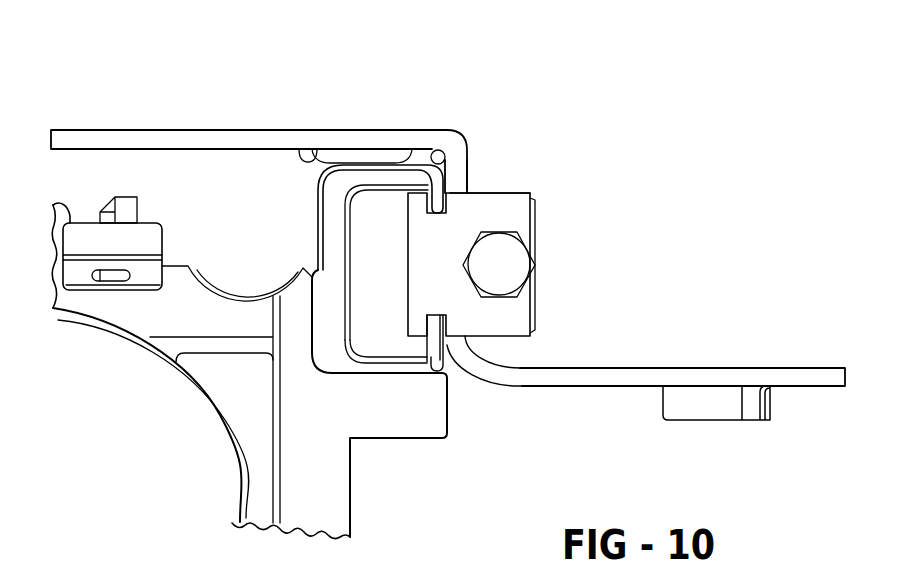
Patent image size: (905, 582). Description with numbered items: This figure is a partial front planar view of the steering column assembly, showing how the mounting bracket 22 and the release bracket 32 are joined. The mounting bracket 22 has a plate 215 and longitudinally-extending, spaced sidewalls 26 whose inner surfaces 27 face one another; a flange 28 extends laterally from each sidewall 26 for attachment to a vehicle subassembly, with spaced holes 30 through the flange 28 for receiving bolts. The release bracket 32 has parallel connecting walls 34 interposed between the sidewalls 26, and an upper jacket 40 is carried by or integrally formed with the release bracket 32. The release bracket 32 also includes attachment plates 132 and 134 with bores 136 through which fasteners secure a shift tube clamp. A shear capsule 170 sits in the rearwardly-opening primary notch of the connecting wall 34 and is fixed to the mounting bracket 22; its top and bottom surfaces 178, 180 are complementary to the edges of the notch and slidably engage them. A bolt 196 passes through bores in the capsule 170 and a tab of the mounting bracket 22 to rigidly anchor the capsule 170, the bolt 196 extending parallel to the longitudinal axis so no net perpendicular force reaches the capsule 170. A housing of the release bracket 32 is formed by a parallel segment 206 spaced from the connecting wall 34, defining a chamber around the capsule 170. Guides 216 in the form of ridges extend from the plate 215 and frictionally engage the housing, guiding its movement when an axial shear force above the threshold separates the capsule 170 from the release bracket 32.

The mounting bracket 22 is at (452, 132).
The sidewall 26 is at (467, 183).
The inner surface 27 is at (447, 147).
The flange 28 is at (818, 368).
The hole 30 is at (715, 421).
The release bracket 32 is at (312, 251).
The connecting wall 34 is at (450, 377).
The upper jacket 40 is at (244, 411).
The attachment plate 132 is at (449, 428).
The attachment plate 134 is at (153, 222).
The bore 136 is at (112, 278).
The shear capsule 170 is at (537, 233).
The top surface 178 is at (518, 192).
The bottom surface 180 is at (512, 338).
The bolt 196 is at (518, 272).
The parallel segment 206 is at (320, 202).
The plate 215 is at (215, 130).
The guide 216 is at (303, 161).